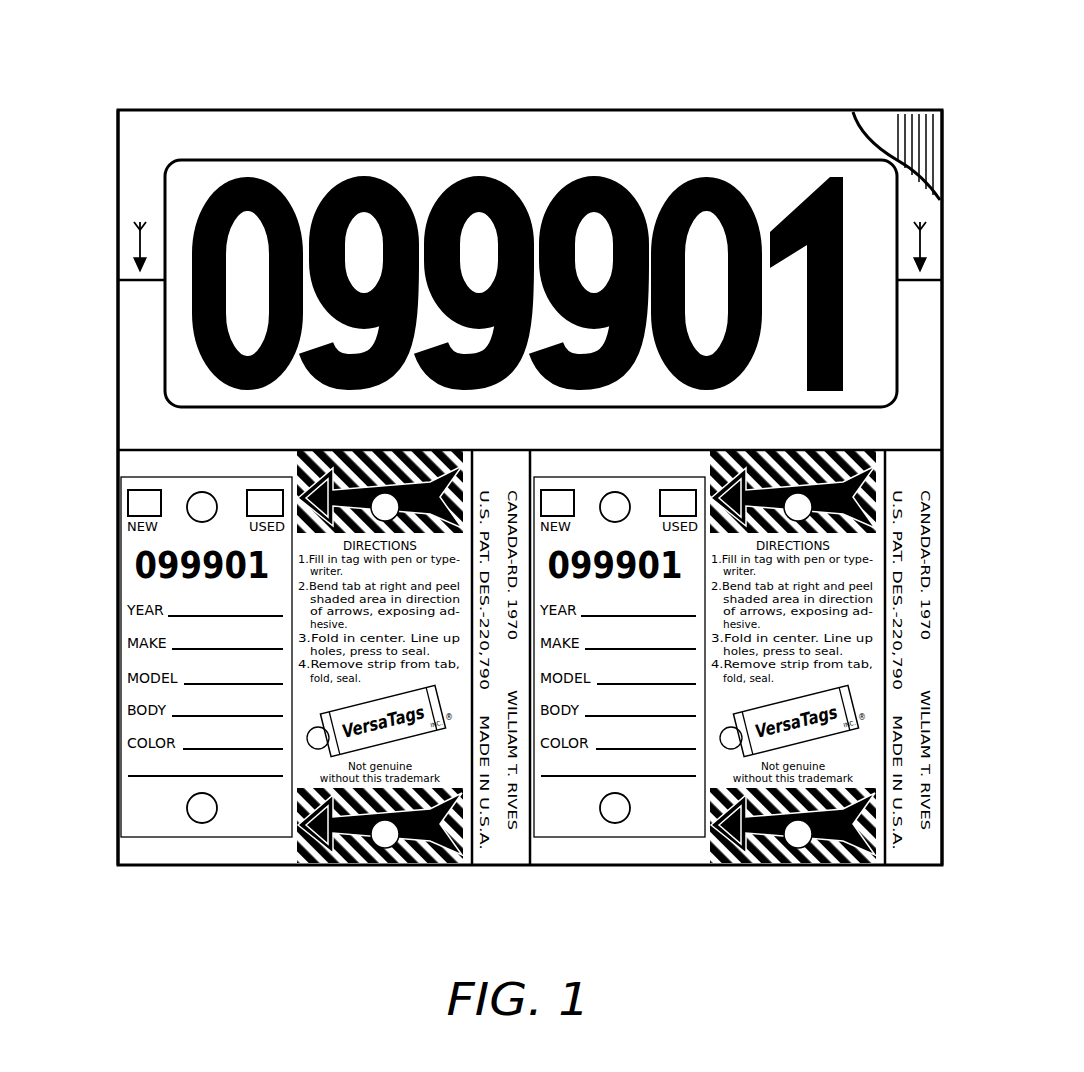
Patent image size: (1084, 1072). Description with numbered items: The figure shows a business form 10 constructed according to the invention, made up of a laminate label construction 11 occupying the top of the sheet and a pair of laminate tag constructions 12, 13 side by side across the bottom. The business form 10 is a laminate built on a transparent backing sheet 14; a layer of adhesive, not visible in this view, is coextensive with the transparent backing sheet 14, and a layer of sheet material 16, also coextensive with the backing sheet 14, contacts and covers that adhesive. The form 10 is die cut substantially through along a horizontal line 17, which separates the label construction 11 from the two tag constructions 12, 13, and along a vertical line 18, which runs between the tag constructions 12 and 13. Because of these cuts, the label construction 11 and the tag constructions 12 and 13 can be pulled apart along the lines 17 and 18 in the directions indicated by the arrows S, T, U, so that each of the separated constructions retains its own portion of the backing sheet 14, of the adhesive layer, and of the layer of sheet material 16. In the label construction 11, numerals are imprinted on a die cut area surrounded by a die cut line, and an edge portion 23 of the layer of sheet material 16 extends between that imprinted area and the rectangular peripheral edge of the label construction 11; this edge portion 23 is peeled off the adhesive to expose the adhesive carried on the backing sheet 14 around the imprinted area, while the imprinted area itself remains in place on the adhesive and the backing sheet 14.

The business form 10 is at (742, 40).
The laminate label construction 11 is at (603, 93).
The laminate tag construction 12 is at (236, 872).
The laminate tag construction 13 is at (843, 884).
The transparent backing sheet 14 is at (878, 118).
The layer of sheet material 16 is at (208, 115).
The horizontal line 17 is at (198, 449).
The vertical line 18 is at (520, 463).
The edge portion 23 is at (345, 115).
The arrow S is at (538, 18).
The arrow T is at (279, 933).
The arrow U is at (770, 931).